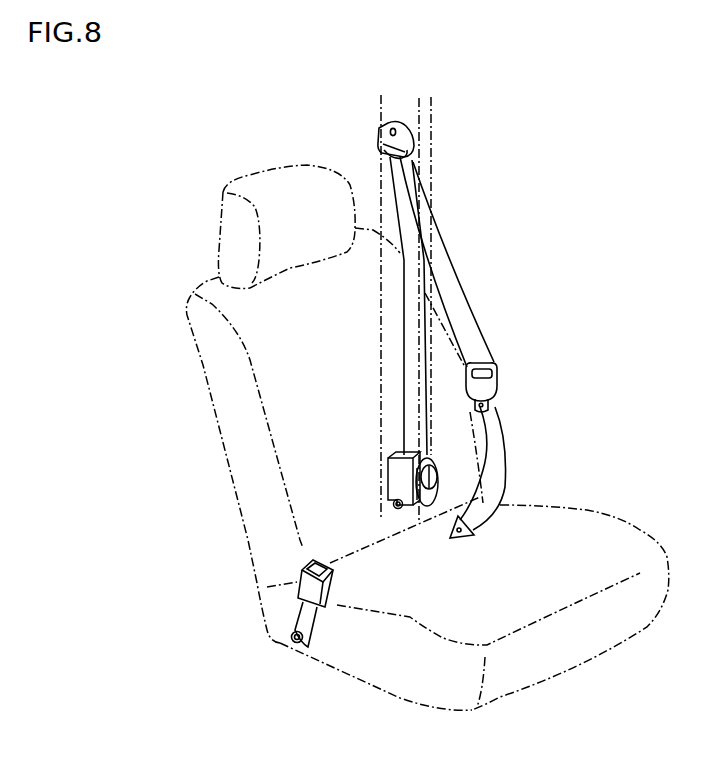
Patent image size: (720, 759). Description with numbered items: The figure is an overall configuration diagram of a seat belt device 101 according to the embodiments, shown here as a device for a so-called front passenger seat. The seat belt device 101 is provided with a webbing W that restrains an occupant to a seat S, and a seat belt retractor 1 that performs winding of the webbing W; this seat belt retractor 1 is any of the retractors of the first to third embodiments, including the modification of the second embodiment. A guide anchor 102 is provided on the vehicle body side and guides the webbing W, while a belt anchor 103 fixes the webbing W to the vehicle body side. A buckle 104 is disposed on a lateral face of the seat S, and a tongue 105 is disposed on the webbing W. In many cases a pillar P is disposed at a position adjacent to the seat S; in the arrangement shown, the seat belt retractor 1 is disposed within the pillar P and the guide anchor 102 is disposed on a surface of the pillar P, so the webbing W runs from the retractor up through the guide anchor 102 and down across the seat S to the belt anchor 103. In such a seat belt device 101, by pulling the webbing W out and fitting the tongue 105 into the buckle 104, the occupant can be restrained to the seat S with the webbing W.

The seat S is at (167, 260).
The pillar P is at (430, 117).
The seat belt device 101 is at (505, 315).
The webbing W is at (448, 264).
The guide anchor 102 is at (378, 134).
The tongue 105 is at (500, 381).
The belt anchor 103 is at (463, 542).
The buckle 104 is at (300, 580).
The seat belt retractor 1 is at (402, 477).